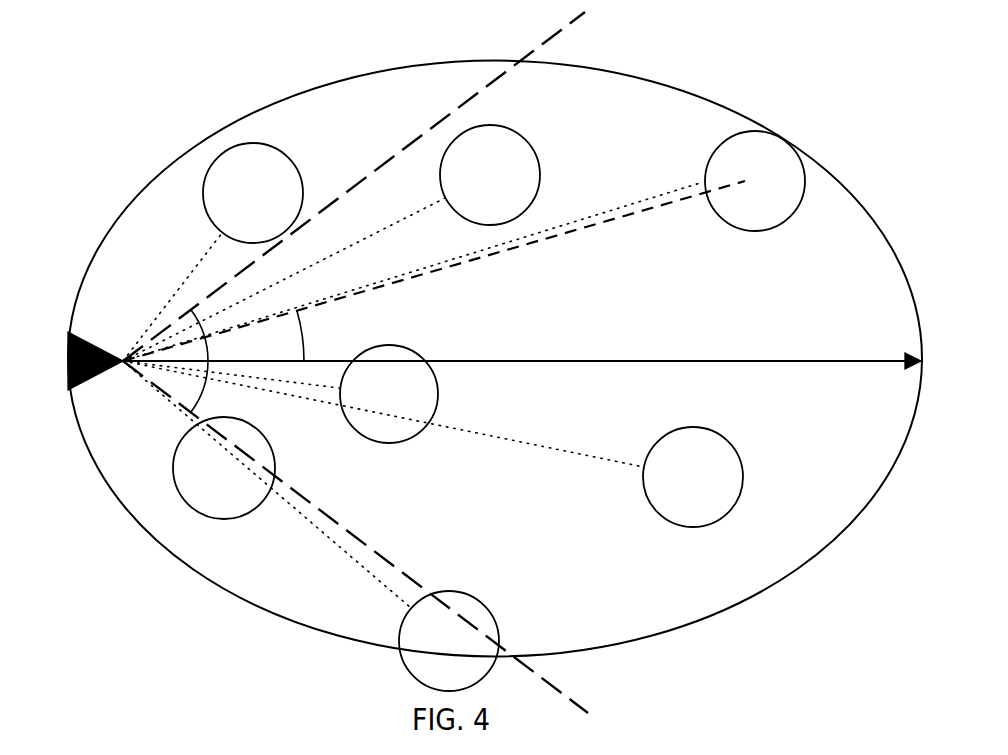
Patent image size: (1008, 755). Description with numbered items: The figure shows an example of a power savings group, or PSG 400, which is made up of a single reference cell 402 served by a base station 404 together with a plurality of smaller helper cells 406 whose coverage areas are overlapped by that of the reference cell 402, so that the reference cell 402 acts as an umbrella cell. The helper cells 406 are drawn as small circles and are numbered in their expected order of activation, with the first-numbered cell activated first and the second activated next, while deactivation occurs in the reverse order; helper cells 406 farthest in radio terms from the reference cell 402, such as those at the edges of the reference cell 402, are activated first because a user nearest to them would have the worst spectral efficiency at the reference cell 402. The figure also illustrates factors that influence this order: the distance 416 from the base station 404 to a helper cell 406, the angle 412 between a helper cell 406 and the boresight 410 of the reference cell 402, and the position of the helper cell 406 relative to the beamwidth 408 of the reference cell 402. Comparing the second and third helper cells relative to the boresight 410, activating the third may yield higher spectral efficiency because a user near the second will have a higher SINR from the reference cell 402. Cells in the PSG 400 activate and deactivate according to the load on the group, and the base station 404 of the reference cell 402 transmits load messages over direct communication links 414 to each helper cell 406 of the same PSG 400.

The power savings group (PSG) 400 is at (337, 42).
The reference cell 402 is at (278, 101).
The base station 404 is at (68, 370).
The helper cell 406 is at (437, 395).
The beamwidth 408 is at (193, 311).
The boresight 410 is at (730, 360).
The angle 412 is at (306, 342).
The direct communication link 414 is at (560, 455).
The distance 416 is at (566, 235).